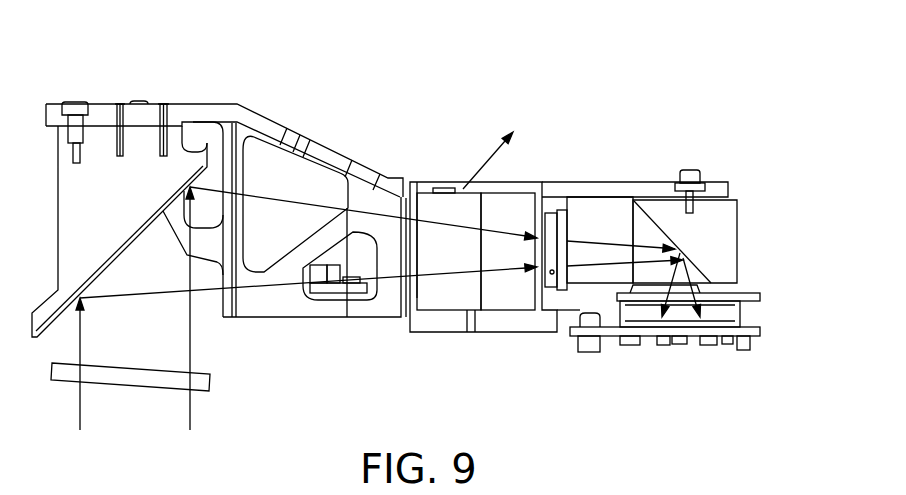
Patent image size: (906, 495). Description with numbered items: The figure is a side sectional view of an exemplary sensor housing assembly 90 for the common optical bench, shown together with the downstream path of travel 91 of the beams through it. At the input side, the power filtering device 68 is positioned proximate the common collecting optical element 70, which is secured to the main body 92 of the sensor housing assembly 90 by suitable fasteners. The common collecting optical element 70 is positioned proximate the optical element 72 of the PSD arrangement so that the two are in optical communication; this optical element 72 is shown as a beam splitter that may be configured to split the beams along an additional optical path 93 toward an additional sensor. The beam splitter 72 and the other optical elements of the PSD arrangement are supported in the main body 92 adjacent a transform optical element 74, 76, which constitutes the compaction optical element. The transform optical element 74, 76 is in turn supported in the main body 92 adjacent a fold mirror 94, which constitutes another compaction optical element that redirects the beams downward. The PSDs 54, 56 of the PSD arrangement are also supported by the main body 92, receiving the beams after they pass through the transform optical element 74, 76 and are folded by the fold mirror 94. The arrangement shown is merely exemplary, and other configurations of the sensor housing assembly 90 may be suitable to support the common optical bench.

The sensor housing assembly 90 is at (100, 65).
The common collecting optical element 70 is at (137, 153).
The downstream path of travel 91 is at (273, 167).
The main body 92 is at (382, 175).
The additional optical path 93 is at (478, 184).
The optical element 72 is at (522, 212).
The transform optical element 74 is at (563, 228).
The transform optical element 76 is at (566, 227).
The fold mirror 94 is at (715, 243).
The PSD 54 is at (703, 343).
The PSD 56 is at (703, 336).
The power filtering device 68 is at (128, 385).